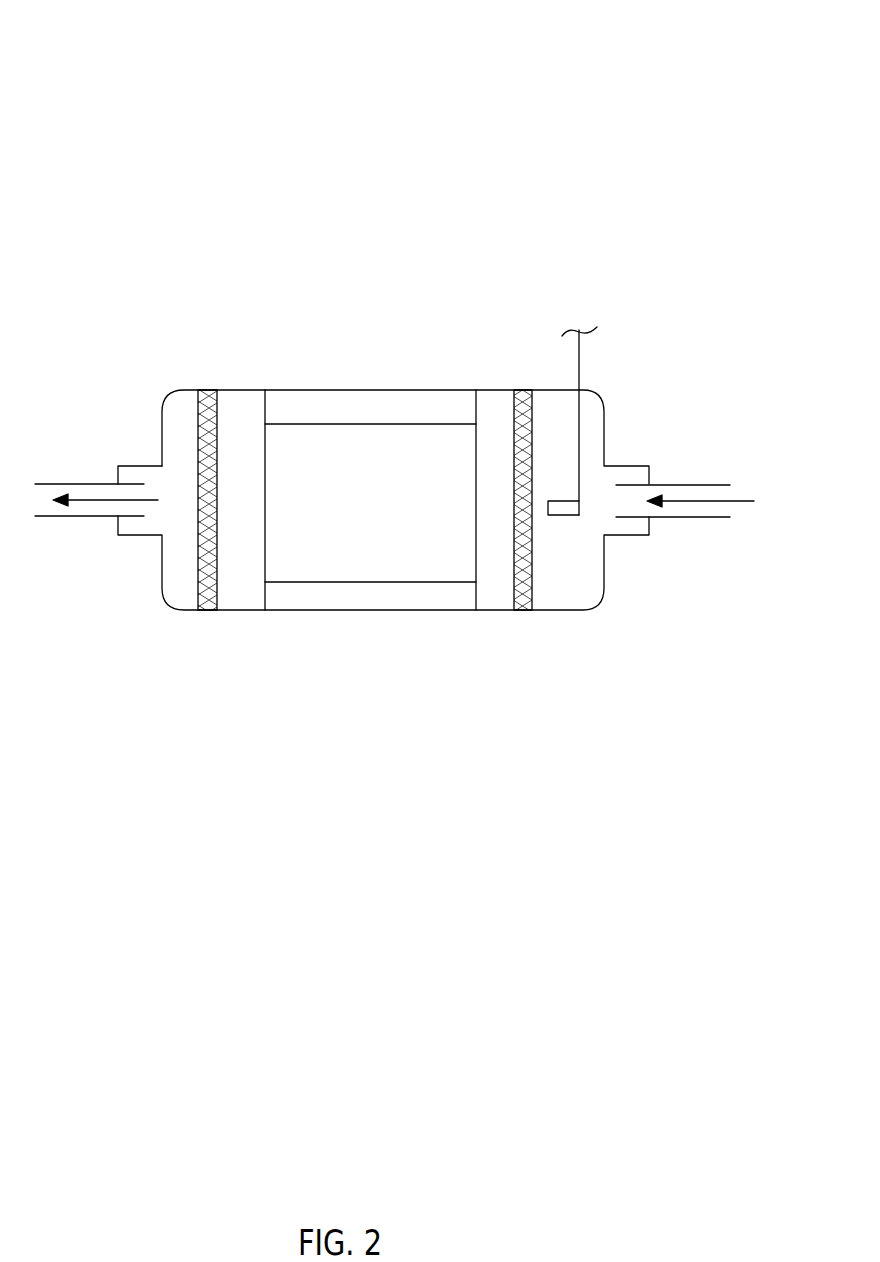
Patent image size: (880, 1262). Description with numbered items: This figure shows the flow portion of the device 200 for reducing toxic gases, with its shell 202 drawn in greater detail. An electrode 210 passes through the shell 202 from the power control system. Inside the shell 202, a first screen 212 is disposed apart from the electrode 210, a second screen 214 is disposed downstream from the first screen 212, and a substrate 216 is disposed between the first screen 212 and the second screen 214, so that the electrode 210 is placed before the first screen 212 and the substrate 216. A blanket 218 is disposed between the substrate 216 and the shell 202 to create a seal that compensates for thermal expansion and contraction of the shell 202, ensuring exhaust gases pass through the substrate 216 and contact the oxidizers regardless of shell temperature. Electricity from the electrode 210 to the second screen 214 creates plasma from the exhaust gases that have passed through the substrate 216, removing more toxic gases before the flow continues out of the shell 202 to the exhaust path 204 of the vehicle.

The device 200 is at (98, 67).
The shell 202 is at (185, 389).
The exhaust path 204 is at (50, 492).
The electrode 210 is at (551, 512).
The first screen 212 is at (522, 606).
The second screen 214 is at (210, 605).
The substrate 216 is at (318, 548).
The blanket 218 is at (363, 403).